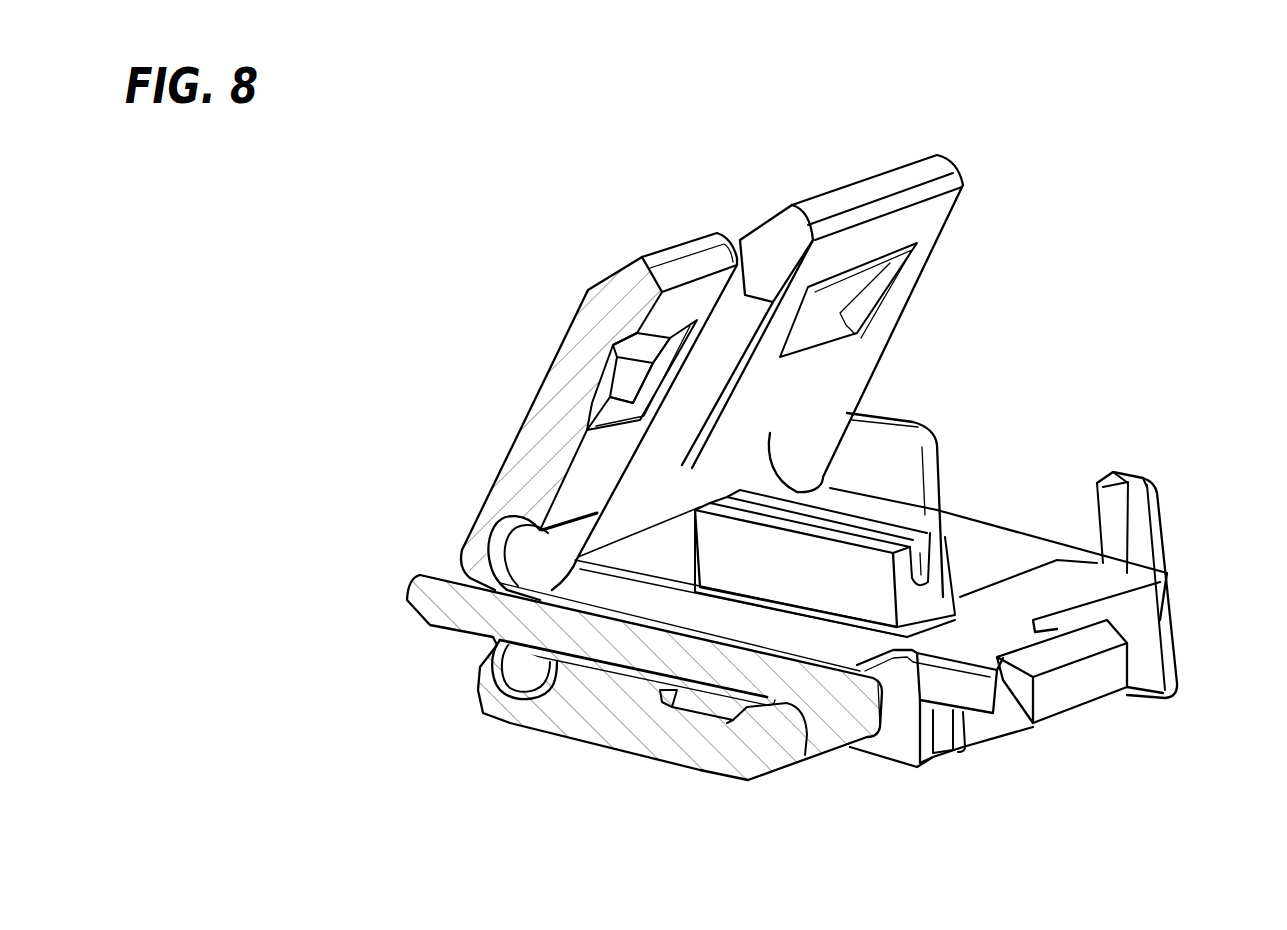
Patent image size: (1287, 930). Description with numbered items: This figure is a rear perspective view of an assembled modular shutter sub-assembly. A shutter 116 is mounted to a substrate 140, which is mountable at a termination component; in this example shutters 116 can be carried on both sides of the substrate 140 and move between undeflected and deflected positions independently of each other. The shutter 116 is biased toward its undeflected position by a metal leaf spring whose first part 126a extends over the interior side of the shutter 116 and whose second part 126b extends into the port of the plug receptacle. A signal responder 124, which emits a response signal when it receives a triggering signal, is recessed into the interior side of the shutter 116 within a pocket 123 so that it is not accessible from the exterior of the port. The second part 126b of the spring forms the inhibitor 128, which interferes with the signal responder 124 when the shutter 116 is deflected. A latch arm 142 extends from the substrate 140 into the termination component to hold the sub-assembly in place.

The shutter 116 is at (930, 220).
The pocket 123 is at (590, 407).
The signal responder 124 is at (615, 380).
The first part of the spring 126a is at (590, 478).
The second part of the spring 126b is at (710, 618).
The inhibitor 128 is at (653, 695).
The substrate 140 is at (1012, 587).
The latch arm 142 is at (1077, 677).